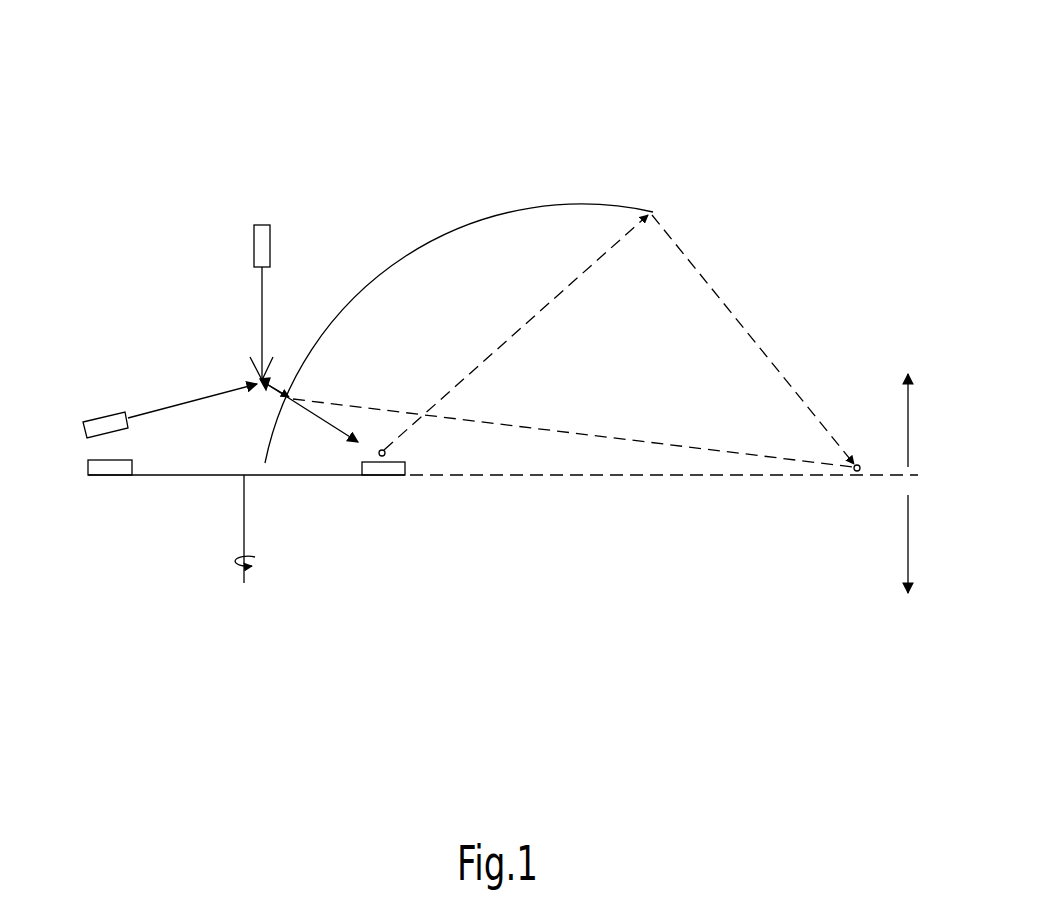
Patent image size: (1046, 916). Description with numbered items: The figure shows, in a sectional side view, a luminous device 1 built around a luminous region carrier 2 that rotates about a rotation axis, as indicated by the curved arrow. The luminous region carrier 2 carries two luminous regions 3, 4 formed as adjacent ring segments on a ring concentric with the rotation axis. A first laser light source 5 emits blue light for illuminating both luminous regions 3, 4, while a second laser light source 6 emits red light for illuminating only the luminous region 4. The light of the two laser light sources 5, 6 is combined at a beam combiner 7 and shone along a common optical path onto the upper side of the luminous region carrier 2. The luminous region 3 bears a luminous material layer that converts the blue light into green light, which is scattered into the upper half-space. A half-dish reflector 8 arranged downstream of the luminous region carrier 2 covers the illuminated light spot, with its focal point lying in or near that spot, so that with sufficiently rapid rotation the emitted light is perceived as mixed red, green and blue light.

The luminous device 1 is at (693, 117).
The luminous region carrier 2 is at (188, 477).
The luminous region 3 is at (105, 470).
The luminous region 4 is at (405, 470).
The first laser light source 5 is at (270, 247).
The second laser light source 6 is at (108, 423).
The beam combiner 7 is at (273, 377).
The reflector 8 is at (492, 222).